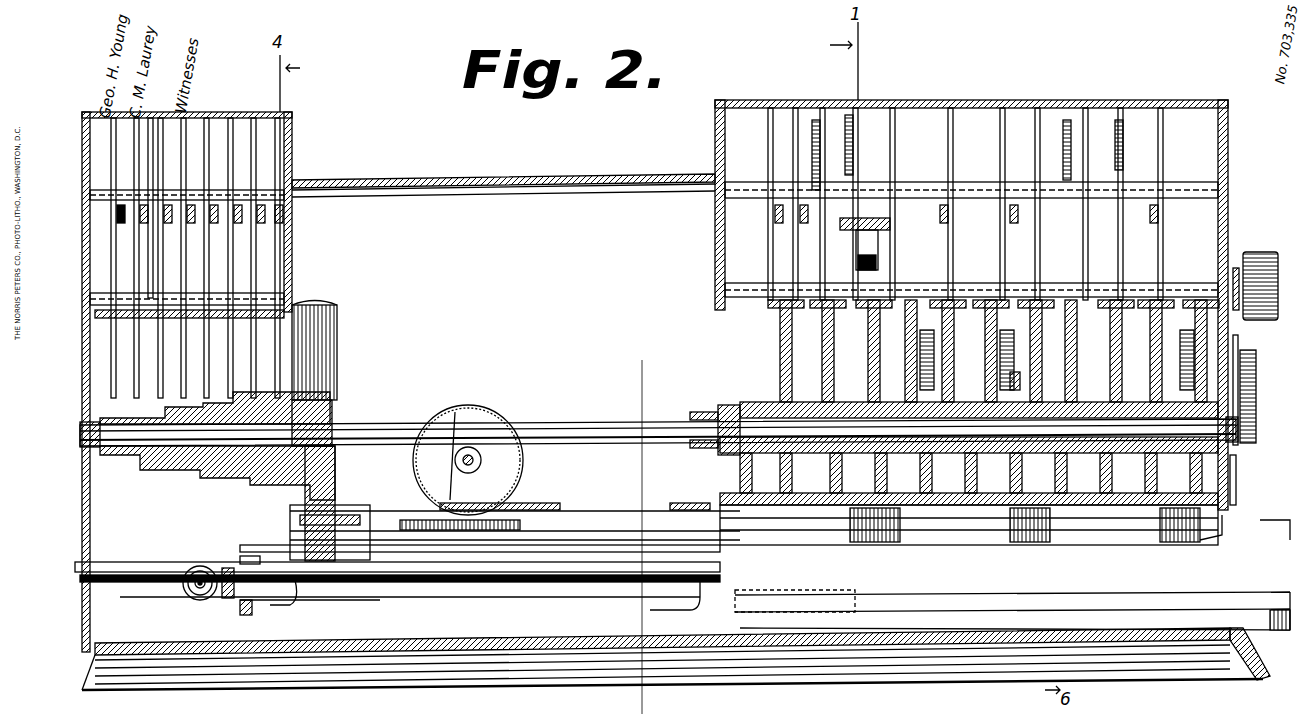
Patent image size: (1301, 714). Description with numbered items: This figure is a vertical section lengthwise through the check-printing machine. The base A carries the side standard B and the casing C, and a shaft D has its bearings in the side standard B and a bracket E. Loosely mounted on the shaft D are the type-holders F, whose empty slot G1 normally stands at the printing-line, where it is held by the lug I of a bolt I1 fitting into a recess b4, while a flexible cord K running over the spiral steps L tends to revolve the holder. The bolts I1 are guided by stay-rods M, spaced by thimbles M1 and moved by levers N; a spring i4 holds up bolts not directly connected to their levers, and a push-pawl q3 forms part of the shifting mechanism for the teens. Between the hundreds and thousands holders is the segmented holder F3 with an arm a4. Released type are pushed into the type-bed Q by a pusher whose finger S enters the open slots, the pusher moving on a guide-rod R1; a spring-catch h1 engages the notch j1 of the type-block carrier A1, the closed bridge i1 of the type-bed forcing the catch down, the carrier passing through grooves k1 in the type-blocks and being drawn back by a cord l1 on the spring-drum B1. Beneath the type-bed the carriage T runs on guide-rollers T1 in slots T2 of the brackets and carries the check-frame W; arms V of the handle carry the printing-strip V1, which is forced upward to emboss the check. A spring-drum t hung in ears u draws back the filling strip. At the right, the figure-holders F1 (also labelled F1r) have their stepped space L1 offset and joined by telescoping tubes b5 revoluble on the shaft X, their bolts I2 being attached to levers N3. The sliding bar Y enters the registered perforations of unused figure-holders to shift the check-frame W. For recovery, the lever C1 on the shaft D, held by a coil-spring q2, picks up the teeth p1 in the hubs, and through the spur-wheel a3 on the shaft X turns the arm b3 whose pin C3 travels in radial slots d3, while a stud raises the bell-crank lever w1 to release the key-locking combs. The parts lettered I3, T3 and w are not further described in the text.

The base A is at (752, 688).
The side standard B is at (90, 530).
The bolts I2 is at (260, 120).
The stay-rods M is at (235, 188).
The levers N3 is at (260, 205).
The flexible cord K is at (948, 285).
The recess b4 is at (227, 272).
The bar I3 is at (290, 300).
The telescoping tubes b5 is at (220, 492).
The pin C3 is at (286, 480).
The figure-holders F1 is at (340, 318).
The stepped space L1 is at (300, 372).
The shaft X is at (659, 421).
The casing C is at (612, 176).
The spring-drum B1 is at (482, 418).
The spur-wheel a3 is at (696, 412).
The sliding bar Y is at (365, 505).
The arm b3 is at (345, 490).
The type-bed Q is at (536, 502).
The type-block carrier A1 is at (570, 508).
The notch j1 is at (632, 505).
The grooves k1 is at (645, 505).
The closed bridge i1 is at (685, 502).
The cord l1 is at (498, 500).
The arms V is at (630, 600).
The carriage T is at (380, 598).
The printing-strip V1 is at (435, 598).
The spring-drum t is at (185, 585).
The ears u is at (190, 605).
The guide-rollers T1 is at (220, 600).
The radial slots d3 is at (285, 598).
The pin w is at (370, 600).
The bracket E is at (250, 648).
The bracket T3 is at (206, 546).
The bolts I1 is at (962, 204).
The thimbles M1 is at (1240, 165).
The levers N is at (965, 205).
The spring i4 is at (950, 147).
The push-pawl q3 is at (880, 255).
The steps L is at (780, 365).
The lug I is at (967, 345).
The tooth p1 is at (950, 400).
The arm a4 is at (1012, 356).
The shaft D is at (1025, 354).
The empty slot G1 is at (969, 514).
The figure-holders F1r is at (746, 476).
The holders F is at (800, 548).
The segmented holder F3 is at (1010, 572).
The guide-rod R1 is at (975, 605).
The slots T2 is at (795, 592).
The check-frame W is at (777, 612).
The finger S is at (1245, 527).
The spring-catch h1 is at (1238, 505).
The lever C1 is at (1268, 232).
The bell-crank lever w1 is at (1240, 260).
The coil-spring q2 is at (1256, 395).